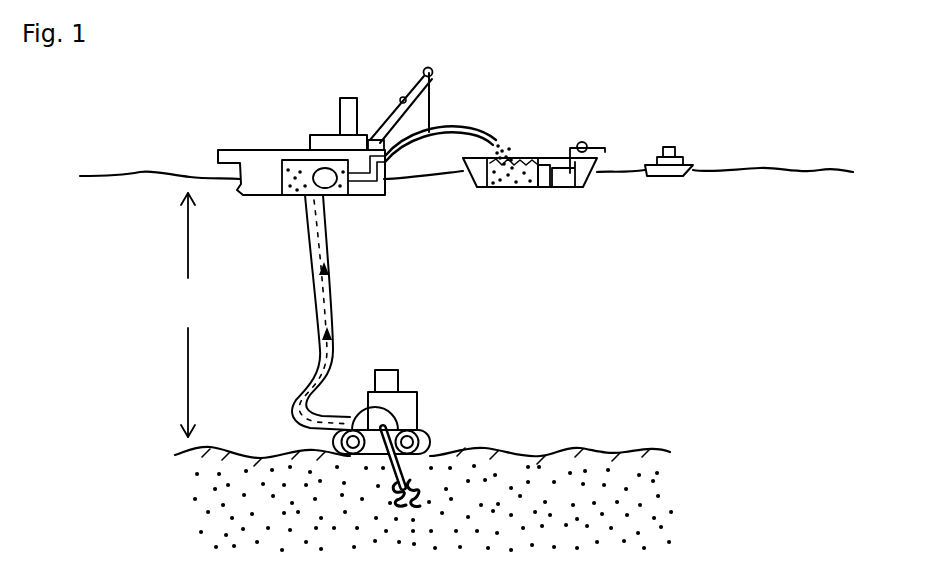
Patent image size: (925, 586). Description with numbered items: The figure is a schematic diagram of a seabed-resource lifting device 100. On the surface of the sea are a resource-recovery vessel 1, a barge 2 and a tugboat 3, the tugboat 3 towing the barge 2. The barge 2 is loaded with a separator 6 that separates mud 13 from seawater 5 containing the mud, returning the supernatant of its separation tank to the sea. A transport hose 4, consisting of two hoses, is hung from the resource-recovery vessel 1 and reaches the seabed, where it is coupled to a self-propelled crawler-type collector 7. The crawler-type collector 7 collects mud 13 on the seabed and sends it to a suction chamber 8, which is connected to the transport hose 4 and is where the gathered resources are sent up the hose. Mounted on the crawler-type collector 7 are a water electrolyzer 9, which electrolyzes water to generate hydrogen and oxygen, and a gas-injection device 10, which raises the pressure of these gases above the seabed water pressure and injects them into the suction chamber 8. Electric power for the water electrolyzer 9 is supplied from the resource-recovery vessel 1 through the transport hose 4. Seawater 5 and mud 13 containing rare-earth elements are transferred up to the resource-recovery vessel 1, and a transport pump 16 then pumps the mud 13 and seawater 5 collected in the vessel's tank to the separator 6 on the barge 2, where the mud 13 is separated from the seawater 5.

The seabed-resource lifting device 100 is at (149, 138).
The resource-recovery vessel 1 is at (268, 150).
The transport pump 16 is at (313, 176).
The barge 2 is at (537, 157).
The separator 6 is at (570, 180).
The tugboat 3 is at (662, 143).
The transport hose 4 is at (327, 237).
The seawater 5 is at (135, 176).
The crawler-type collector 7 is at (445, 428).
The suction chamber 8 is at (350, 404).
The water electrolyzer 9 is at (420, 412).
The gas-injection device 10 is at (395, 368).
The mud 13 is at (530, 458).